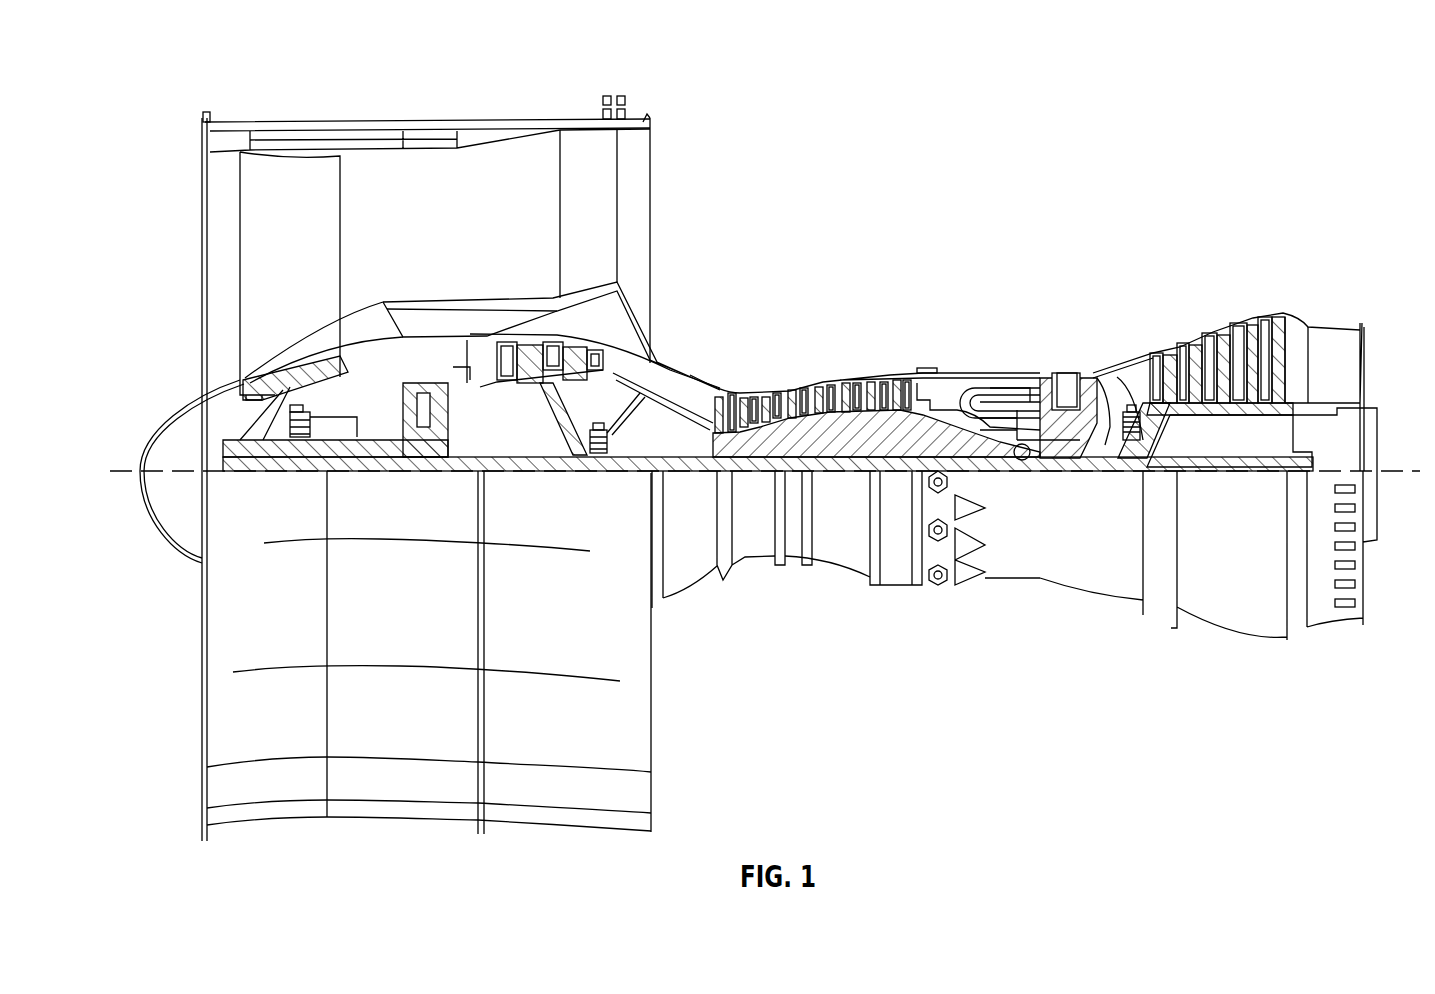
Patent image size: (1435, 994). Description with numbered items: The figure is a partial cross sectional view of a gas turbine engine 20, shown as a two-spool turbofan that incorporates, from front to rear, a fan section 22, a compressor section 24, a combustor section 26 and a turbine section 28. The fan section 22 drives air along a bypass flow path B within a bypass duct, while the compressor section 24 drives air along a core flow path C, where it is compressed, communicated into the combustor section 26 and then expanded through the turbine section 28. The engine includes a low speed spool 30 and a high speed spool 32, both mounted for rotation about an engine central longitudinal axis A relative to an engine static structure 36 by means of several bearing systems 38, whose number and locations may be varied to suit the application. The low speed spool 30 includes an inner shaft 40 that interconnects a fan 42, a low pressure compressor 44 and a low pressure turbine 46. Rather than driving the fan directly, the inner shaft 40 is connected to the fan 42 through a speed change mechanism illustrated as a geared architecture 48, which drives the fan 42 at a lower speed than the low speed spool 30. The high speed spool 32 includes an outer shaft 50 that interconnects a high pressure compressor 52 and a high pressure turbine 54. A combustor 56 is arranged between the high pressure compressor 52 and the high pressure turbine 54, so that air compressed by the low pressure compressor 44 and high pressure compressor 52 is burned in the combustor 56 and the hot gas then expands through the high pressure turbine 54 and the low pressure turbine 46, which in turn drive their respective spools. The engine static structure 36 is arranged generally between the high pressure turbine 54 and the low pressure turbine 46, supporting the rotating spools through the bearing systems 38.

The gas turbine engine 20 is at (1253, 90).
The fan section 22 is at (312, 116).
The compressor section 24 is at (797, 274).
The combustor section 26 is at (967, 296).
The turbine section 28 is at (1097, 284).
The low speed spool 30 is at (856, 480).
The high speed spool 32 is at (915, 423).
The engine static structure 36 is at (903, 581).
The bearing systems 38 is at (300, 437).
The inner shaft 40 is at (667, 467).
The fan 42 is at (276, 250).
The low pressure compressor 44 is at (570, 352).
The low pressure turbine 46 is at (1225, 342).
The geared architecture 48 is at (423, 447).
The outer shaft 50 is at (1020, 460).
The high pressure compressor 52 is at (823, 440).
The high pressure turbine 54 is at (1068, 372).
The combustor 56 is at (988, 400).
The engine central longitudinal axis A is at (1393, 467).
The bypass flow path B is at (505, 215).
The core flow path C is at (411, 342).